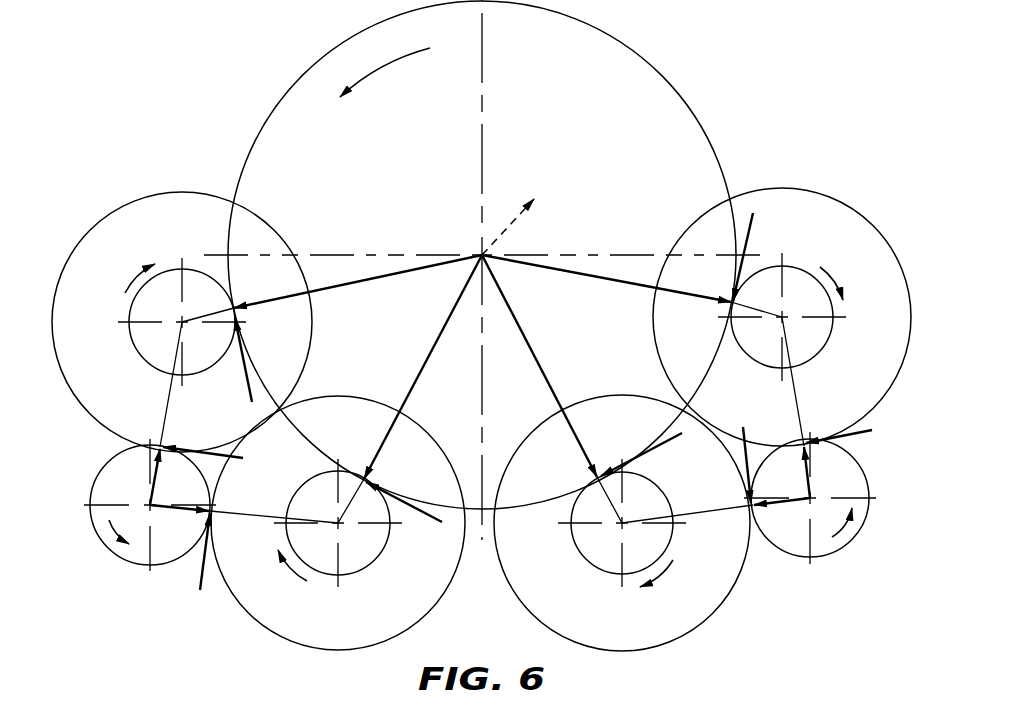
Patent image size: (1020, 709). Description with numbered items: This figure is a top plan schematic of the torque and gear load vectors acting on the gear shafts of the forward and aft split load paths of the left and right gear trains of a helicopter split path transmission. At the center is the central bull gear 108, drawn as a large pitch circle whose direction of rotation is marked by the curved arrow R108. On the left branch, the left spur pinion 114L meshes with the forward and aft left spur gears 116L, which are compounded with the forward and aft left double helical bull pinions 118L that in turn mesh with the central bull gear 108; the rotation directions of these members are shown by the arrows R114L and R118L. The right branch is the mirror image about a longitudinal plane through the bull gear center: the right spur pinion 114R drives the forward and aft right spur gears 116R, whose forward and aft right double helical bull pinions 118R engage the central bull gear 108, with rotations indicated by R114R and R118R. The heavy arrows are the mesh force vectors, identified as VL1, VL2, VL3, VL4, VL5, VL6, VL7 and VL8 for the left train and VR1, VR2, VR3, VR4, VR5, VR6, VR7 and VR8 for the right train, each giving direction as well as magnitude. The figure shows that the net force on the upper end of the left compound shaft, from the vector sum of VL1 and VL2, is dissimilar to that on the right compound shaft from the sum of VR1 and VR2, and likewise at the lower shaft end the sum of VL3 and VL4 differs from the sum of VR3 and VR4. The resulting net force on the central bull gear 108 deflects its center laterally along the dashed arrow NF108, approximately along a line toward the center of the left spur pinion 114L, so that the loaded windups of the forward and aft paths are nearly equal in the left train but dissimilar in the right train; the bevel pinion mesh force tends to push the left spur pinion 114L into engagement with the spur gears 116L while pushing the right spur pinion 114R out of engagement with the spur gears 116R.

The central bull gear 108 is at (633, 137).
The direction of rotation of central bull gear R108 is at (385, 76).
The net force arrow on central bull gear NF108 is at (511, 218).
The forward and aft left spur gears 116L is at (395, 630).
The forward and aft left double helical bull pinions 118L is at (438, 618).
The direction of rotation of left bull pinions R118L is at (243, 640).
The left spur pinion 114L is at (167, 553).
The direction of rotation of left spur pinion R114L is at (116, 533).
The forward and aft right spur gears 116R is at (568, 630).
The forward and aft right double helical bull pinions 118R is at (790, 272).
The direction of rotation of right bull pinions R118R is at (688, 662).
The right spur pinion 114R is at (847, 463).
The direction of rotation of right spur pinion R114R is at (842, 533).
The left gear train mesh force vector VL1 is at (278, 304).
The left gear train mesh force vector VL2 is at (254, 398).
The left gear train mesh force vector VL3 is at (222, 453).
The left gear train mesh force vector VL4 is at (153, 470).
The left gear train mesh force vector VL5 is at (205, 508).
The left gear train mesh force vector VL6 is at (200, 590).
The left gear train mesh force vector VL7 is at (393, 428).
The left gear train mesh force vector VL8 is at (414, 512).
The right gear train mesh force vector VR1 is at (688, 293).
The right gear train mesh force vector VR2 is at (752, 228).
The right gear train mesh force vector VR3 is at (866, 427).
The right gear train mesh force vector VR4 is at (805, 472).
The right gear train mesh force vector VR5 is at (787, 508).
The right gear train mesh force vector VR6 is at (741, 457).
The right gear train mesh force vector VR7 is at (578, 433).
The right gear train mesh force vector VR8 is at (657, 443).